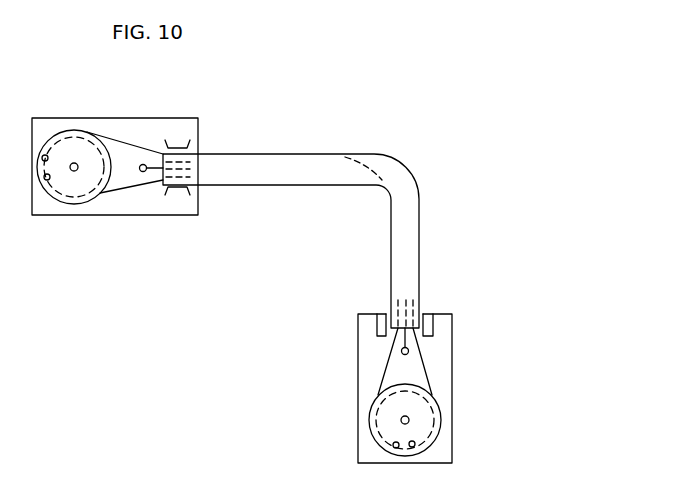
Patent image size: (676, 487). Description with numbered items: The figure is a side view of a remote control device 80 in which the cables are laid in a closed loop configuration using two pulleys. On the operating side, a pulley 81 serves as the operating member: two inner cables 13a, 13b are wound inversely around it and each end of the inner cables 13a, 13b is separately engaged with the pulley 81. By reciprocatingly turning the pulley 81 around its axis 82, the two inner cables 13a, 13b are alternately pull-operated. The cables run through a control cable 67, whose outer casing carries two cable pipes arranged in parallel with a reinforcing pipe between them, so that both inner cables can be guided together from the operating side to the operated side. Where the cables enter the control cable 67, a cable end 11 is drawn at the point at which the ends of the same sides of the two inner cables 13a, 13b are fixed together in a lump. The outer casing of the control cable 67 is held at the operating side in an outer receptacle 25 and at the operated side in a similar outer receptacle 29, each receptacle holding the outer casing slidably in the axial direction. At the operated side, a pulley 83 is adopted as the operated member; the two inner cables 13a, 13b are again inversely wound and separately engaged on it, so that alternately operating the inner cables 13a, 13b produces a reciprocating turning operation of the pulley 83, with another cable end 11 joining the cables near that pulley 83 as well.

The remote control device 80 is at (355, 123).
The pulley 81 is at (88, 150).
The axis 82 is at (74, 162).
The pulley 83 is at (392, 414).
The inner cable 13a is at (138, 146).
The inner cable 13b is at (120, 188).
The connecting pin 11 is at (147, 174).
The outer receptacle 25 is at (178, 140).
The outer receptacle 29 is at (418, 320).
The control cable 67 is at (262, 187).